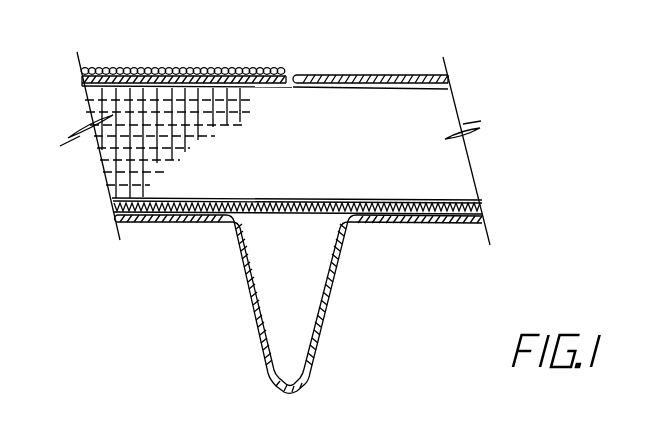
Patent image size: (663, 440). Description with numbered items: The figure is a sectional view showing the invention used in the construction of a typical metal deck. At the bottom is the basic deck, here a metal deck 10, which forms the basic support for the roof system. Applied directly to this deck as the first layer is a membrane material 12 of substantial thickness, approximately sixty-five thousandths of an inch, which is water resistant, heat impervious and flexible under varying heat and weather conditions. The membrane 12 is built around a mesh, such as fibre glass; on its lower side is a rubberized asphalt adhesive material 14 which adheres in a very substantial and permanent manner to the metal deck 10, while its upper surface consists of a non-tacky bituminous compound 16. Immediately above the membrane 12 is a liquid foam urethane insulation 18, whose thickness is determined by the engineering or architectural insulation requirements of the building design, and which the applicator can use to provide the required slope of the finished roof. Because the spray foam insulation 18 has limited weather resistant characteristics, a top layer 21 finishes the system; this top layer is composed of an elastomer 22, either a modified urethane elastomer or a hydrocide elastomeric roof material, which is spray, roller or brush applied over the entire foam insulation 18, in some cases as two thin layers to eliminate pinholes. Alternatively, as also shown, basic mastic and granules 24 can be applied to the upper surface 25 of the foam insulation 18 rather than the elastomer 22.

The metal deck 10 is at (320, 350).
The membrane material 12 is at (329, 291).
The rubberized asphalt adhesive material 14 is at (275, 216).
The non-tacky bituminous compound 16 is at (115, 199).
The foam urethane insulation 18 is at (118, 143).
The top layer 21 is at (311, 74).
The elastomer 22 is at (450, 80).
The mastic and granules 24 is at (186, 60).
The upper surface of foam insulation 25 is at (371, 84).